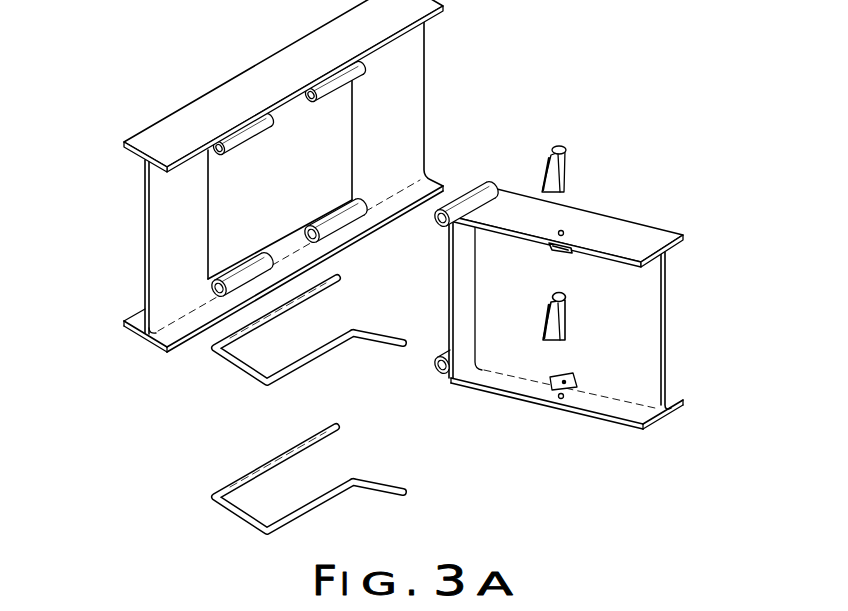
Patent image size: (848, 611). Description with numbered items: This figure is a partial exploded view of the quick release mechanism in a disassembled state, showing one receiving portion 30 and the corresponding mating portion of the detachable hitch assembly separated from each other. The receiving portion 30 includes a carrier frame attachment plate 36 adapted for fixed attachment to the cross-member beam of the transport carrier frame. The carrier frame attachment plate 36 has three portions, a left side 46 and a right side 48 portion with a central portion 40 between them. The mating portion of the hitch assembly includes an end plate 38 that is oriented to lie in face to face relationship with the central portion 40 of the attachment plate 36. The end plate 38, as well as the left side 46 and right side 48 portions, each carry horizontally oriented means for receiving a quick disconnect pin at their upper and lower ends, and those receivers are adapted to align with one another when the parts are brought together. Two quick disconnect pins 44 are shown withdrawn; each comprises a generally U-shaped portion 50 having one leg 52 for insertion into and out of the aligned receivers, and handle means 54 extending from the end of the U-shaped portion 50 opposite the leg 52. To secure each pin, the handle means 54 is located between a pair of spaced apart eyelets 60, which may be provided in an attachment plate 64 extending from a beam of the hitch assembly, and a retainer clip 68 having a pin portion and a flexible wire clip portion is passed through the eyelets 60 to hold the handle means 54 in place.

The receiving portion 30 is at (234, 187).
The carrier frame attachment plate 36 is at (265, 176).
The end plate 38 is at (596, 314).
The central portion 40 is at (309, 148).
The quick disconnect pin 44 is at (284, 479).
The left side portion 46 is at (228, 205).
The right side portion 48 is at (338, 143).
The U-shaped portion 50 is at (293, 406).
The leg 52 is at (284, 330).
The handle means 54 is at (378, 412).
The eyelet 60 is at (563, 234).
The attachment plate 64 is at (571, 252).
The retainer clip 68 is at (594, 316).